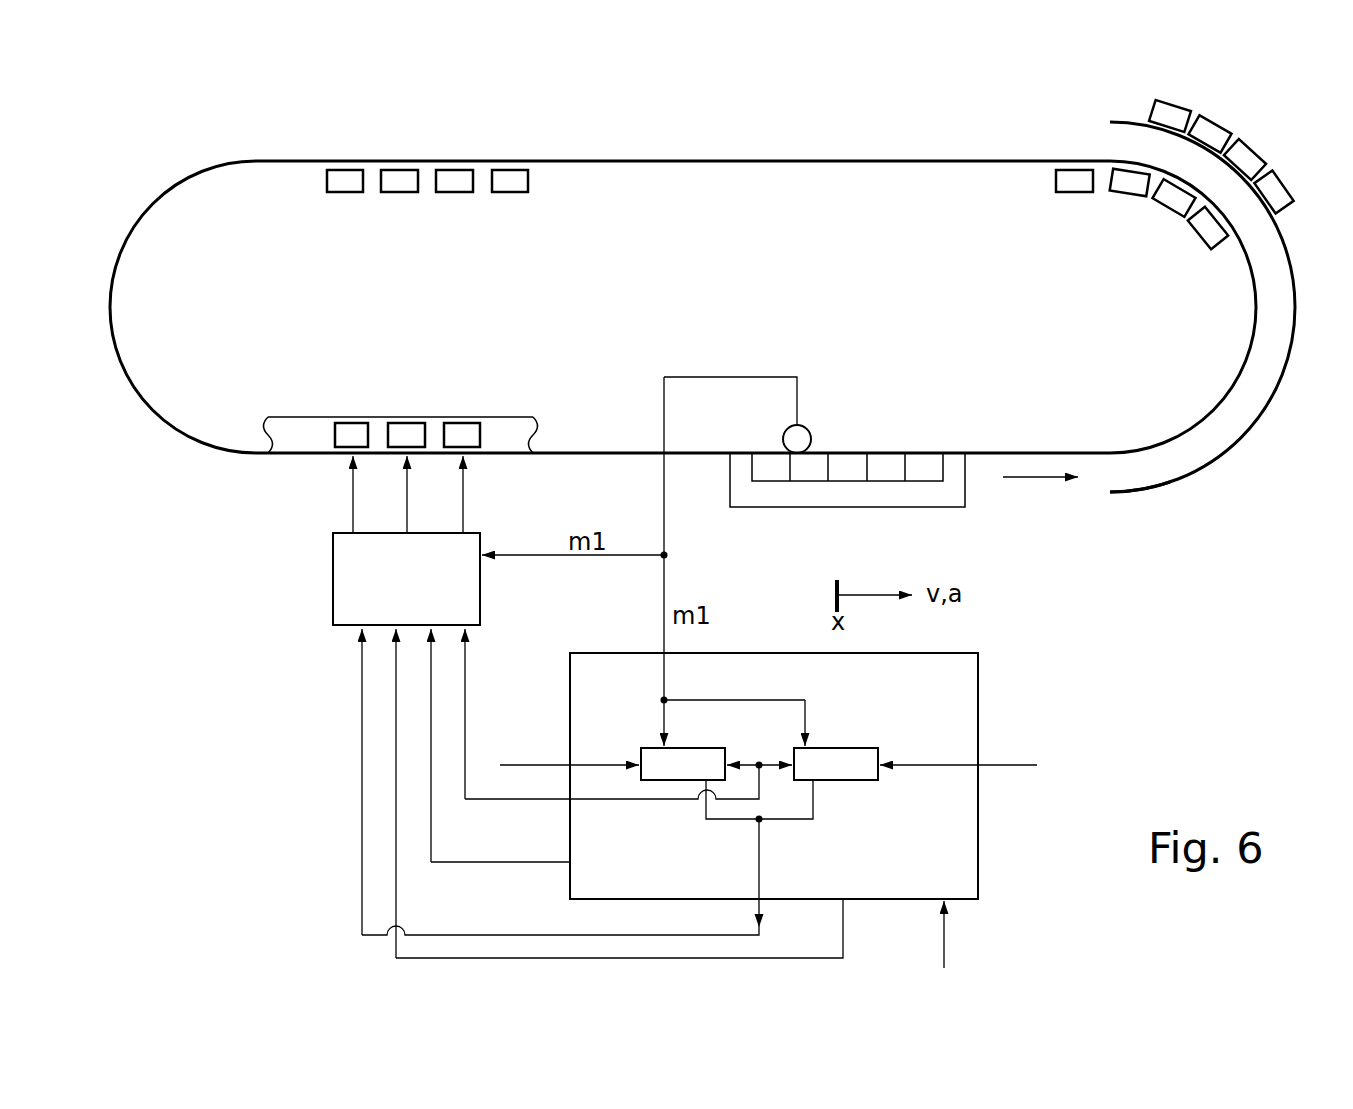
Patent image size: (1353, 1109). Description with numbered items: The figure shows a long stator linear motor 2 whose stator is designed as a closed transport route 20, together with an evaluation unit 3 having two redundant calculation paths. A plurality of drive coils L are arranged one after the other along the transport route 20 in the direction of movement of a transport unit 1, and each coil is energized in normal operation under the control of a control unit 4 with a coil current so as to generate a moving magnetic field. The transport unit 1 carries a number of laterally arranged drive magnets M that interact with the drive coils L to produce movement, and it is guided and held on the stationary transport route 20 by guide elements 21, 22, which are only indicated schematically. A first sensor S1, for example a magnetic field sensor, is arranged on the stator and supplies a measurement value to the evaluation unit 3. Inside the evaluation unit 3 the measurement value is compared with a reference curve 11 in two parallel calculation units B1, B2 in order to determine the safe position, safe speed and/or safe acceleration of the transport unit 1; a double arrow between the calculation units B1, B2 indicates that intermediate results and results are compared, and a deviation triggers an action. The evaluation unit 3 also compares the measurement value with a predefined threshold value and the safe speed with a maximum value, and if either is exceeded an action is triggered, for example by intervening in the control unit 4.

The transport unit 1 is at (878, 512).
The long stator linear motor 2 is at (137, 177).
The evaluation unit 3 is at (703, 798).
The control unit 4 is at (421, 590).
The reference curve 11 is at (768, 749).
The transport route 20 is at (1247, 475).
The guide element 21 is at (990, 452).
The guide element 22 is at (1148, 498).
The drive coils L is at (400, 192).
The drive magnets M is at (771, 481).
The first sensor S1 is at (783, 430).
The calculation unit B1 is at (683, 764).
The calculation unit B2 is at (836, 764).